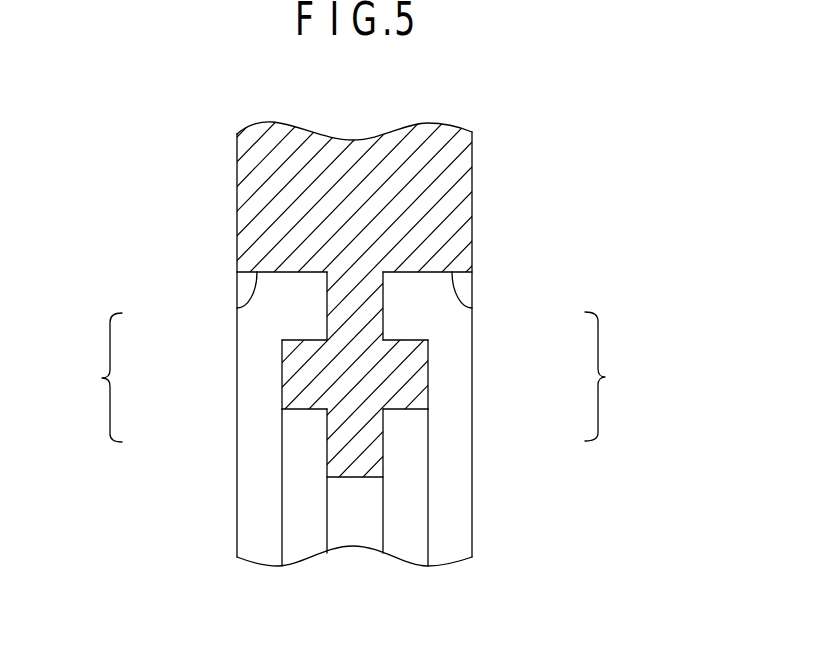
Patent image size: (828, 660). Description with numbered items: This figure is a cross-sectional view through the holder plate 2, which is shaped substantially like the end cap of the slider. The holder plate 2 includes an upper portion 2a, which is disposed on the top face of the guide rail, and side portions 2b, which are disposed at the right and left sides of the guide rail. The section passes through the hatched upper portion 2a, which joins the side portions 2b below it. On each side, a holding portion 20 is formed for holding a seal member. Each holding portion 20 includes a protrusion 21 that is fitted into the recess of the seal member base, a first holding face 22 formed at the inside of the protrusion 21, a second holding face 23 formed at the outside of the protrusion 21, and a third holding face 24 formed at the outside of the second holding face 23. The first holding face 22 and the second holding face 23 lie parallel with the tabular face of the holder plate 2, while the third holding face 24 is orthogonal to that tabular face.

The holder plate 2 is at (584, 249).
The upper portion 2a is at (476, 183).
The side portion 2b is at (345, 517).
The holding portion 20 is at (354, 377).
The protrusion 21 is at (292, 390).
The first holding face 22 is at (327, 451).
The second holding face 23 is at (327, 302).
The third holding face 24 is at (237, 306).